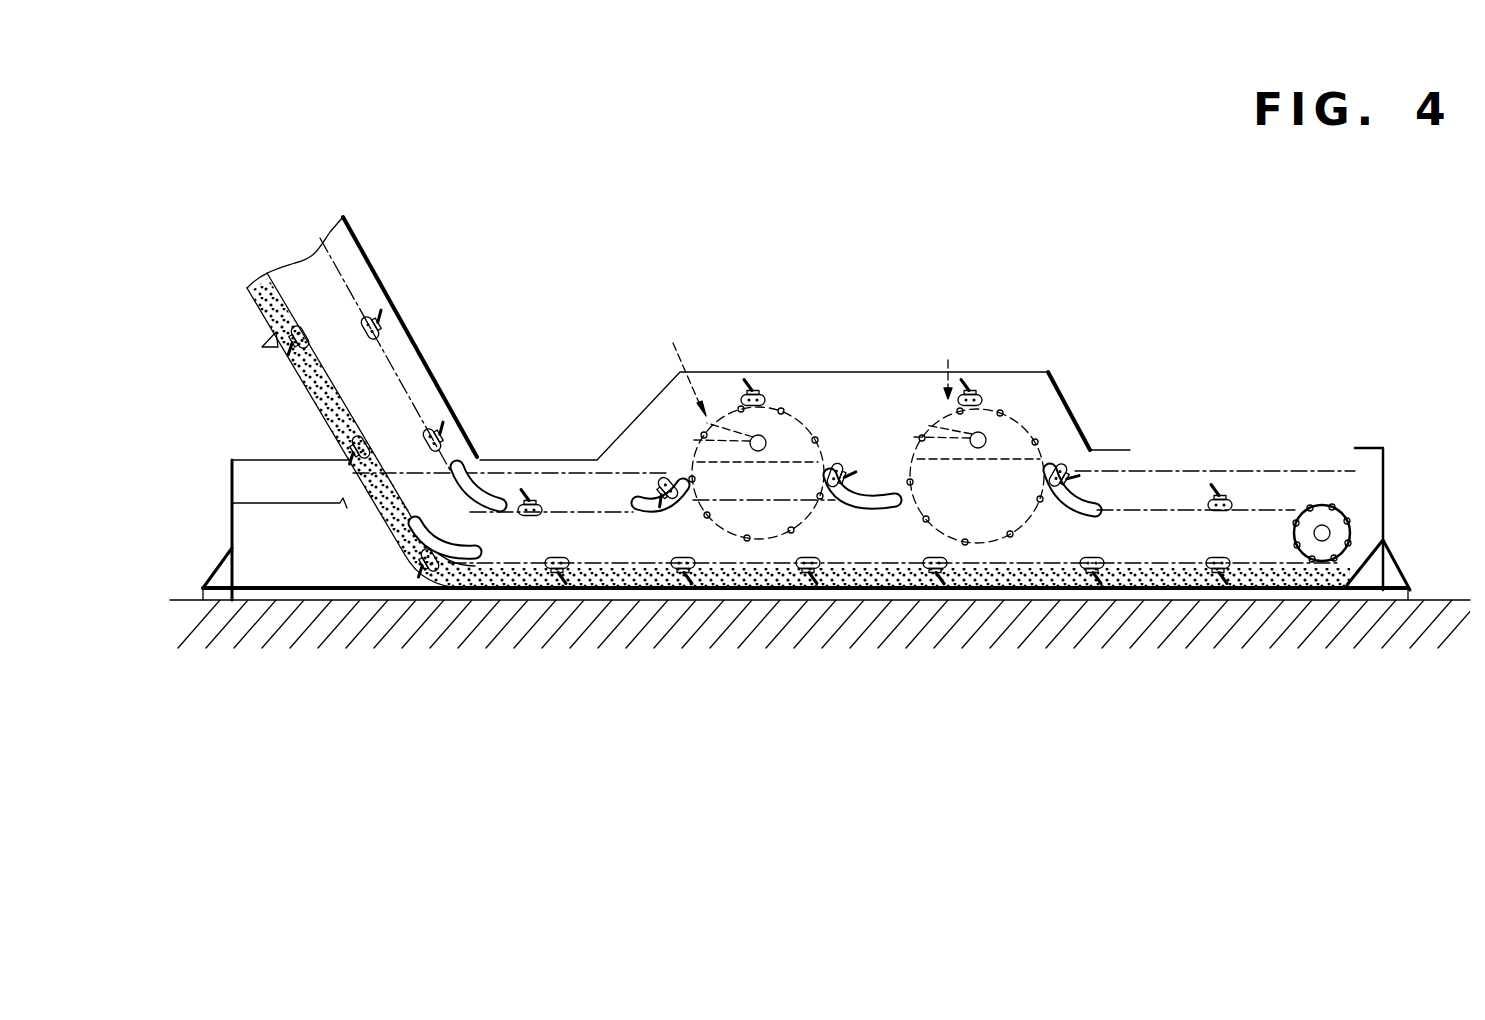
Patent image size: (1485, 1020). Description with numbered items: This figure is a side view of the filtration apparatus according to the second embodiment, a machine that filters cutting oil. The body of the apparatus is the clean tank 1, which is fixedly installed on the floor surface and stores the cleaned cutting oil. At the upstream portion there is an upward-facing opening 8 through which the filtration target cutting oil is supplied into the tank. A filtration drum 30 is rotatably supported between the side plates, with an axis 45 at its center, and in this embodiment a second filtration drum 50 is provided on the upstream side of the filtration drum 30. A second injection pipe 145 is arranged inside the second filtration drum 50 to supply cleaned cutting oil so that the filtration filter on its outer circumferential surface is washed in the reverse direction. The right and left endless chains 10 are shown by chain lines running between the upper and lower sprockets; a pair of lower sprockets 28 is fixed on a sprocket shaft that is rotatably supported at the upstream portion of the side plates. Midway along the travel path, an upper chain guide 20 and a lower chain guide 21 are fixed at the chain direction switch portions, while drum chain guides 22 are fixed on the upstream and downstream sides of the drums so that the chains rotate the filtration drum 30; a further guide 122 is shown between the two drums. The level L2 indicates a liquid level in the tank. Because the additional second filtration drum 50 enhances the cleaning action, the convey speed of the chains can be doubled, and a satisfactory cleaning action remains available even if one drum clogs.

The clean tank 1 is at (870, 552).
The opening 8 is at (1295, 457).
The right endless chain 10 is at (1196, 456).
The upper chain guide 20 is at (483, 480).
The lower chain guide 21 is at (458, 550).
The drum chain guide 22 is at (637, 497).
The lower sprocket 28 is at (1337, 528).
The filtration drum 30 is at (680, 365).
The drum axis 45 is at (759, 435).
The second filtration drum 50 is at (953, 364).
The guide rail 122 is at (867, 490).
The second injection pipe 145 is at (984, 433).
The liquid level L2 is at (253, 503).